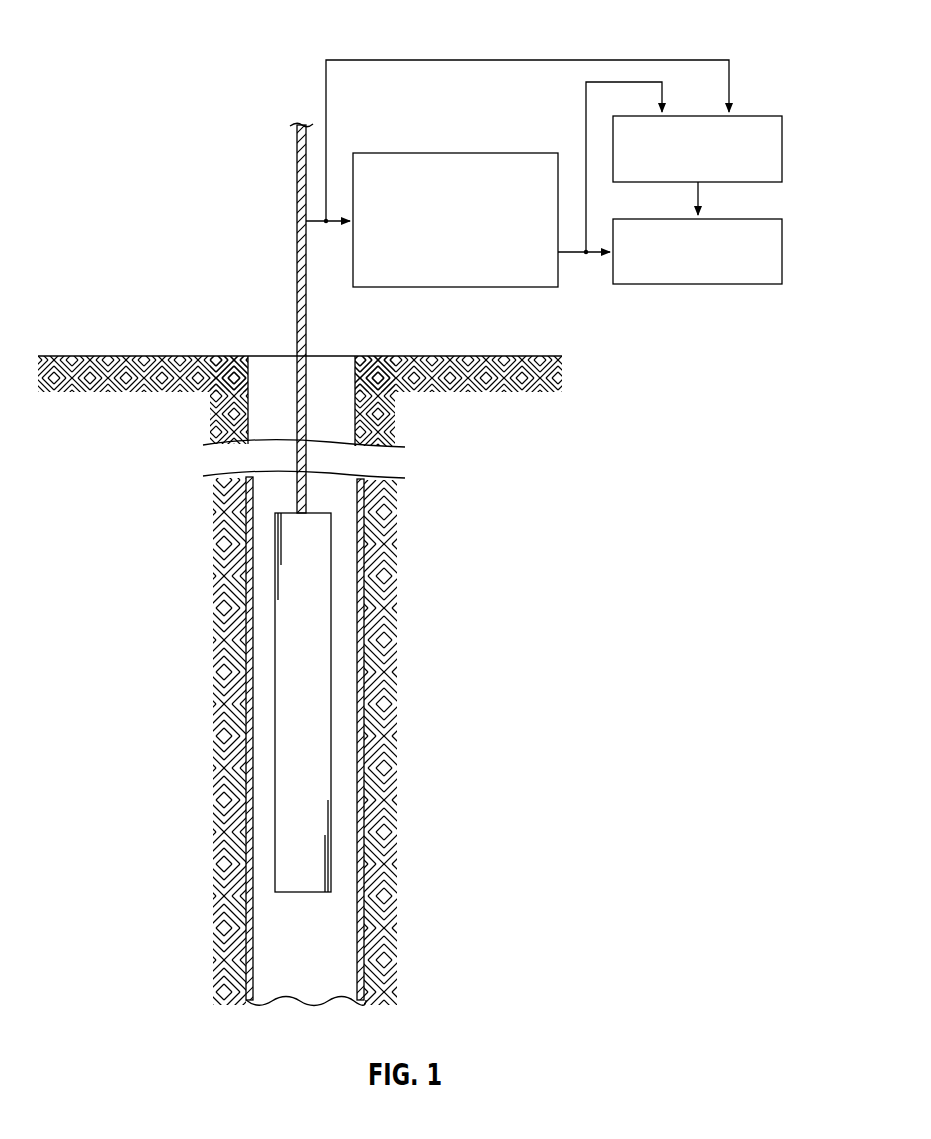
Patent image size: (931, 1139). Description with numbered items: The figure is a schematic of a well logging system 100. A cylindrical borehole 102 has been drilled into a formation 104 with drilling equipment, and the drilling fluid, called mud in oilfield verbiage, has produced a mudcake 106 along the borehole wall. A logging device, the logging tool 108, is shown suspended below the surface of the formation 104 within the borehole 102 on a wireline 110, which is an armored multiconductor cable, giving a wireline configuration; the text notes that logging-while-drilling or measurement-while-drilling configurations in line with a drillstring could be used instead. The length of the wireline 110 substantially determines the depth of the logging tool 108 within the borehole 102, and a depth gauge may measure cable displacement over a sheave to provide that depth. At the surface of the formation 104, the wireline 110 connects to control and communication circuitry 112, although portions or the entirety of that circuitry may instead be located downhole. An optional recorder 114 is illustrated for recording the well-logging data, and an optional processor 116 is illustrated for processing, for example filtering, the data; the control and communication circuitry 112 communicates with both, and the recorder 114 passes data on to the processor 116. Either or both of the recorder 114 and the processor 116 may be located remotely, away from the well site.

The well logging system 100 is at (145, 43).
The borehole 102 is at (271, 373).
The formation 104 is at (227, 406).
The mudcake 106 is at (219, 828).
The logging tool 108 is at (266, 515).
The wireline 110 is at (306, 336).
The control and communication circuitry 112 is at (415, 152).
The recorder 114 is at (755, 116).
The processor 116 is at (755, 219).